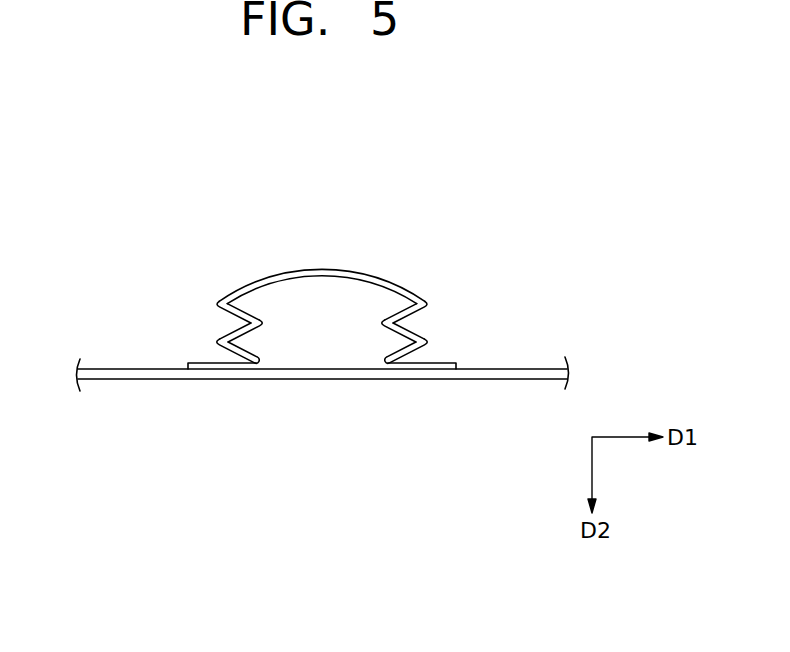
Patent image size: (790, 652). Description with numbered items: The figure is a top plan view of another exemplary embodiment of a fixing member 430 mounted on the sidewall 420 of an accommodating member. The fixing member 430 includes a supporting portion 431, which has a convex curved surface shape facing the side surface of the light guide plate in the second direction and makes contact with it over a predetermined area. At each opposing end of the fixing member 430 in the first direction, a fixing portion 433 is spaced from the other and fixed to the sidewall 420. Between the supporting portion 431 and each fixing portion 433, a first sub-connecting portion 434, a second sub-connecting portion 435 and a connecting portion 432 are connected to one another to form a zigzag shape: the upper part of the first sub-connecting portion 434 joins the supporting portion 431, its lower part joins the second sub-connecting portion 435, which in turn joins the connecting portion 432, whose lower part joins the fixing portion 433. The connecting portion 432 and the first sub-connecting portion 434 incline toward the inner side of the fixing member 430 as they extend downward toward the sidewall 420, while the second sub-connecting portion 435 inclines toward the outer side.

The sidewall 420 is at (438, 375).
The fixing member 430 is at (359, 263).
The supporting portion 431 is at (320, 278).
The connecting portion 432 is at (407, 348).
The fixing portion 433 is at (442, 365).
The first sub-connecting portion 434 is at (423, 298).
The second sub-connecting portion 435 is at (407, 327).